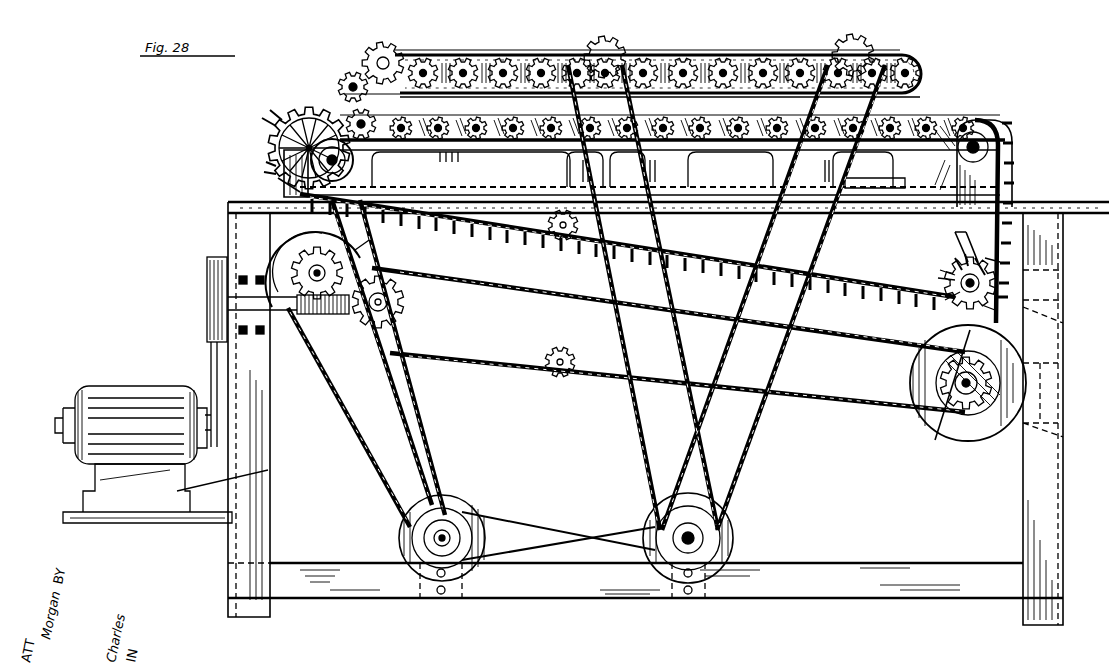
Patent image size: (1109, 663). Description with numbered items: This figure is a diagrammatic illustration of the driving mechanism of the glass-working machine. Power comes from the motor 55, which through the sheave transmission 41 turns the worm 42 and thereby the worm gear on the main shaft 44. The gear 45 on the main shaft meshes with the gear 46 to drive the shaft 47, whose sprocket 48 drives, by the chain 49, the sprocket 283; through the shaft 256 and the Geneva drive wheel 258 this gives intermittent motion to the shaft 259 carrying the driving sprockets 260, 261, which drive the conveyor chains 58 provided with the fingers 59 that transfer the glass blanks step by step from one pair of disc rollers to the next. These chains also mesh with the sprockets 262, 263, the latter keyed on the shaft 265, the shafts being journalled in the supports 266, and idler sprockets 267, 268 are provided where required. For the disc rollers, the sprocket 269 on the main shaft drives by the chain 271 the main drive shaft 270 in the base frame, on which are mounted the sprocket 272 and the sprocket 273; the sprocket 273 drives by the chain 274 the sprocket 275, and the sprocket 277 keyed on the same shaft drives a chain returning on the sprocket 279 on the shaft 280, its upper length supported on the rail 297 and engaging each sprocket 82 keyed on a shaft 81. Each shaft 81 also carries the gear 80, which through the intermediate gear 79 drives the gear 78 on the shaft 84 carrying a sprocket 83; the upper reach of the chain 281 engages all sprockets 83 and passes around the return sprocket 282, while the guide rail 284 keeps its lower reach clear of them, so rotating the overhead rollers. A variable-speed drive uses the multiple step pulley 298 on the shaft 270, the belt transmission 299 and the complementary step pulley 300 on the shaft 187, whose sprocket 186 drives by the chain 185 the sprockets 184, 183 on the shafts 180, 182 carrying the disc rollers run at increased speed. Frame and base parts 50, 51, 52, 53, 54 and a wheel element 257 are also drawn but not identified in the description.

The sheave transmission 41 is at (211, 370).
The worm 42 is at (300, 320).
The main shaft 44 is at (350, 246).
The gear 45 is at (325, 230).
The gear 46 is at (395, 268).
The shaft 47 is at (388, 310).
The sprocket 48 is at (400, 300).
The chain 49 is at (540, 287).
The frame 50 is at (330, 550).
The brace 51 is at (262, 472).
The frame post 52 is at (1023, 501).
The motor base 53 is at (150, 523).
The top rail 54 is at (724, 213).
The motor 55 is at (106, 386).
The conveyor chains 58 is at (864, 282).
The fingers 59 is at (858, 299).
The gear 78 is at (370, 56).
The intermediate gear 79 is at (340, 82).
The gear 80 is at (350, 112).
The shaft 81 is at (740, 148).
The sprocket 82 is at (962, 112).
The sprocket 83 is at (878, 166).
The shaft 84 is at (896, 60).
The shaft 180 is at (800, 165).
The shaft 182 is at (845, 165).
The sprocket 183 is at (600, 160).
The sprocket 184 is at (785, 157).
The chain 185 is at (700, 424).
The sprocket 186 is at (722, 522).
The shaft 187 is at (705, 540).
The shaft 256 is at (946, 392).
The wheel 257 is at (972, 440).
The Geneva drive wheel 258 is at (955, 265).
The shaft 259 is at (940, 270).
The driving sprocket 260 is at (982, 240).
The driving sprocket 261 is at (992, 146).
The sprocket 262 is at (1014, 160).
The sprocket 263 is at (266, 165).
The shaft 265 is at (272, 142).
The supports 266 is at (290, 180).
The idler sprocket 267 is at (550, 223).
The idler sprocket 268 is at (562, 350).
The sprocket 269 is at (372, 240).
The main drive shaft 270 is at (430, 542).
The chain 271 is at (362, 436).
The sprocket 272 is at (452, 500).
The sprocket 273 is at (420, 530).
The chain 274 is at (398, 450).
The sprocket 275 is at (354, 166).
The sprocket 277 is at (265, 123).
The sprocket 279 is at (920, 195).
The shaft 280 is at (900, 183).
The chain 281 is at (575, 54).
The return sprocket 282 is at (920, 80).
The sprocket 283 is at (942, 385).
The guide rail 284 is at (762, 55).
The rail 297 is at (452, 155).
The multiple step pulley 298 is at (487, 538).
The belt transmission 299 is at (558, 529).
The step pulley 300 is at (558, 535).